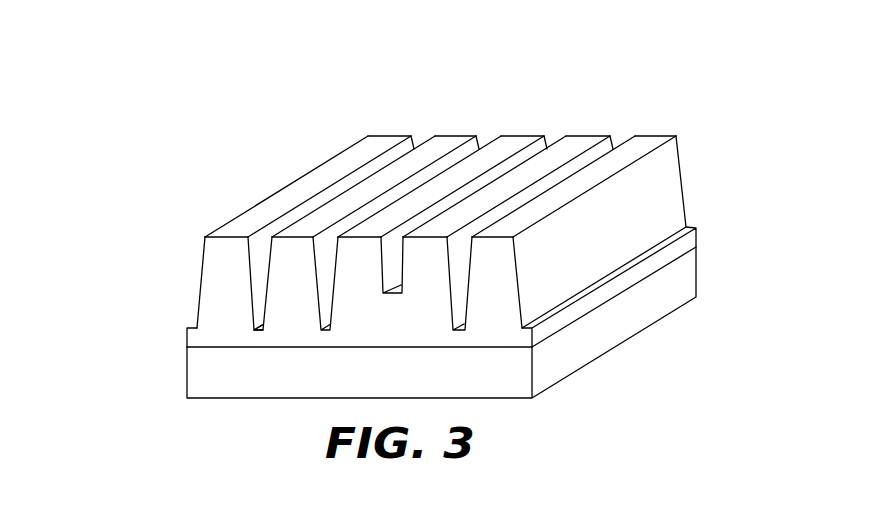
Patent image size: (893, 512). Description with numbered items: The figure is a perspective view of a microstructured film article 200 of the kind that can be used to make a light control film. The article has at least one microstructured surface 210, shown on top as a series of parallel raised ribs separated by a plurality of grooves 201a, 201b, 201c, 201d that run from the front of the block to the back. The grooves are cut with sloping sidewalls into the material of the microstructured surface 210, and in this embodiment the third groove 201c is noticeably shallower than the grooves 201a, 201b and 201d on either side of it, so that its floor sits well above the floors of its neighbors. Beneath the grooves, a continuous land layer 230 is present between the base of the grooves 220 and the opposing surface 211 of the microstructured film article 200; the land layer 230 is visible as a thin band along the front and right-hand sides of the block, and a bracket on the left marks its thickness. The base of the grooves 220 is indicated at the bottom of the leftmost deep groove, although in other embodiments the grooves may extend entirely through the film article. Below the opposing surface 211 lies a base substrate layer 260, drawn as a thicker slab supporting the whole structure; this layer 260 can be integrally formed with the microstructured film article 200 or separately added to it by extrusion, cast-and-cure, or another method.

The microstructured film article 200 is at (289, 124).
The groove 201a is at (422, 136).
The groove 201b is at (489, 136).
The groove 201c is at (555, 136).
The groove 201d is at (624, 136).
The microstructured surface 210 is at (465, 198).
The opposing surface 211 is at (281, 347).
The base of the grooves 220 is at (257, 325).
The continuous land layer 230 is at (185, 347).
The base substrate layer 260 is at (405, 381).